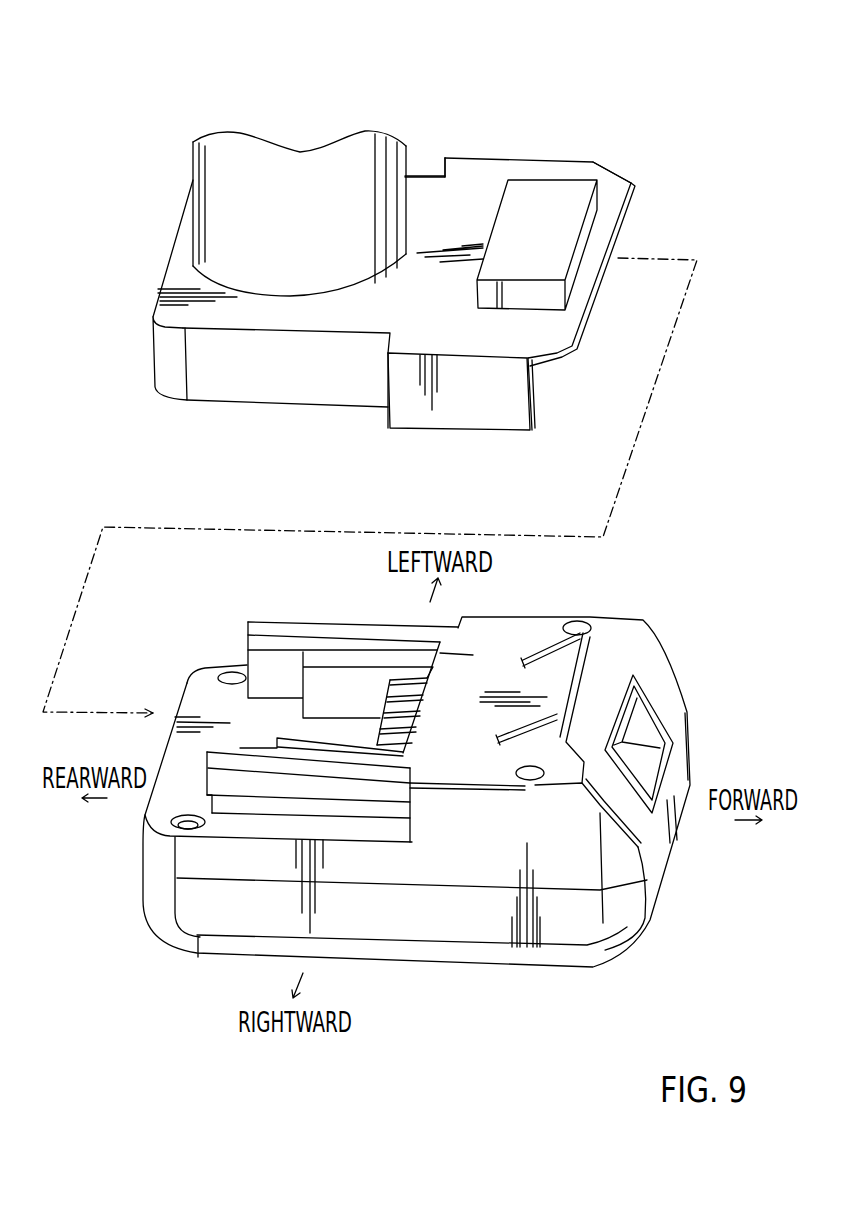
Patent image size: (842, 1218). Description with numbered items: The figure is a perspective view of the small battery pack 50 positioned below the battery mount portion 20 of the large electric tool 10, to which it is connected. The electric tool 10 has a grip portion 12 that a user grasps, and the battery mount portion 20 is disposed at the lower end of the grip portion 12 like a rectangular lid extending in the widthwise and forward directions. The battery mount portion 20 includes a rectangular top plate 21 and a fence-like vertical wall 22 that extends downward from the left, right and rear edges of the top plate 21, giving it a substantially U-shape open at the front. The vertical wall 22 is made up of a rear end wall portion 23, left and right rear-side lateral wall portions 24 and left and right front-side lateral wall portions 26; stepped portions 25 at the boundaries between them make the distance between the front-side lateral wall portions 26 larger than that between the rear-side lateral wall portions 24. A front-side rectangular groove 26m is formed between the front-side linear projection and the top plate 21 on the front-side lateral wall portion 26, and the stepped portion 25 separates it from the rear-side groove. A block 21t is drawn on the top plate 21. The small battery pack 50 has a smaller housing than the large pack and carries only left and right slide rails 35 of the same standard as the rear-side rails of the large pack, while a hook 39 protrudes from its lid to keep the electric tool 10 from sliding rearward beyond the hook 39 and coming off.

The electric tool 10 is at (367, 72).
The grip portion 12 is at (282, 203).
The battery mount portion 20 is at (521, 281).
The top plate 21 is at (467, 237).
The terminal block 21t is at (540, 230).
The vertical wall 22 is at (266, 272).
The rear end wall portion 23 is at (153, 338).
The rear-side lateral wall portion 24 is at (225, 363).
The stepped portion 25 is at (445, 160).
The front-side lateral wall portion 26 is at (573, 160).
The front-side rectangular groove 26m is at (528, 368).
The small battery pack 50 is at (430, 755).
The slide rail 35 is at (332, 609).
The hook 39 is at (587, 690).